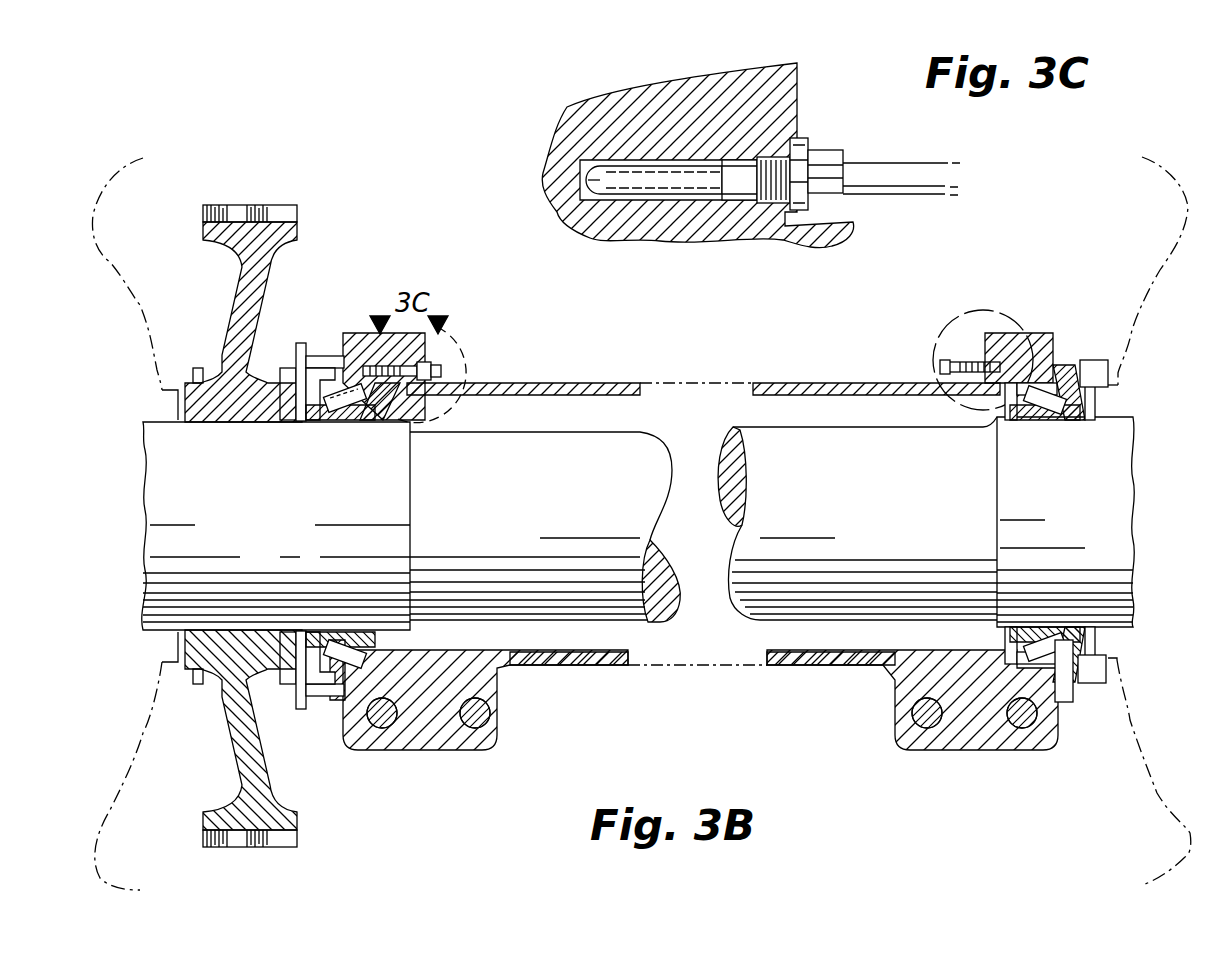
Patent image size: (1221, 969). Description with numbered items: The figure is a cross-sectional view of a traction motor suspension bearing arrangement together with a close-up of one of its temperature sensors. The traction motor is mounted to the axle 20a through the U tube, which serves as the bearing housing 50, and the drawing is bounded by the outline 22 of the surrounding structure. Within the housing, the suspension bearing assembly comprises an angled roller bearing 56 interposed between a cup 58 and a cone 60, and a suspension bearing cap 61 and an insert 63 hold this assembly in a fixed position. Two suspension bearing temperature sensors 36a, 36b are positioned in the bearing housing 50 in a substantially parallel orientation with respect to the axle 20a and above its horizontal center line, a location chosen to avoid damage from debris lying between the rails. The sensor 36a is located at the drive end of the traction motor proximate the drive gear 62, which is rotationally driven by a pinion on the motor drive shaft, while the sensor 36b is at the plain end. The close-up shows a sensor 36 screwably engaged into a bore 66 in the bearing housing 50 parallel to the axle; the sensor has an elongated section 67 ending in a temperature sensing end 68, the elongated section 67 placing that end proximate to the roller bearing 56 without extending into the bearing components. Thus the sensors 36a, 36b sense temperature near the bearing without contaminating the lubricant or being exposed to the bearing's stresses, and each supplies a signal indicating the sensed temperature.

In FIG. 3B, the axle 20a is at (733, 612).
In FIG. 3B, the frame housing outline 22 is at (95, 214).
In FIG. 3C, the suspension bearing temperature sensor 36 is at (830, 152).
In FIG. 3B, the suspension bearing temperature sensor 36a is at (462, 358).
In FIG. 3B, the suspension bearing temperature sensor 36b is at (935, 350).
In FIG. 3B, the bearing housing 50 is at (828, 380).
In FIG. 3B, the angled roller bearing 56 is at (343, 692).
In FIG. 3B, the cup 58 is at (352, 662).
In FIG. 3B, the cone 60 is at (306, 665).
In FIG. 3B, the suspension bearing cap 61 is at (1095, 677).
In FIG. 3B, the drive gear 62 is at (262, 205).
In FIG. 3B, the insert 63 is at (1057, 672).
In FIG. 3C, the bore 66 is at (590, 172).
In FIG. 3C, the elongated section 67 is at (786, 243).
In FIG. 3C, the temperature sensing end 68 is at (586, 181).